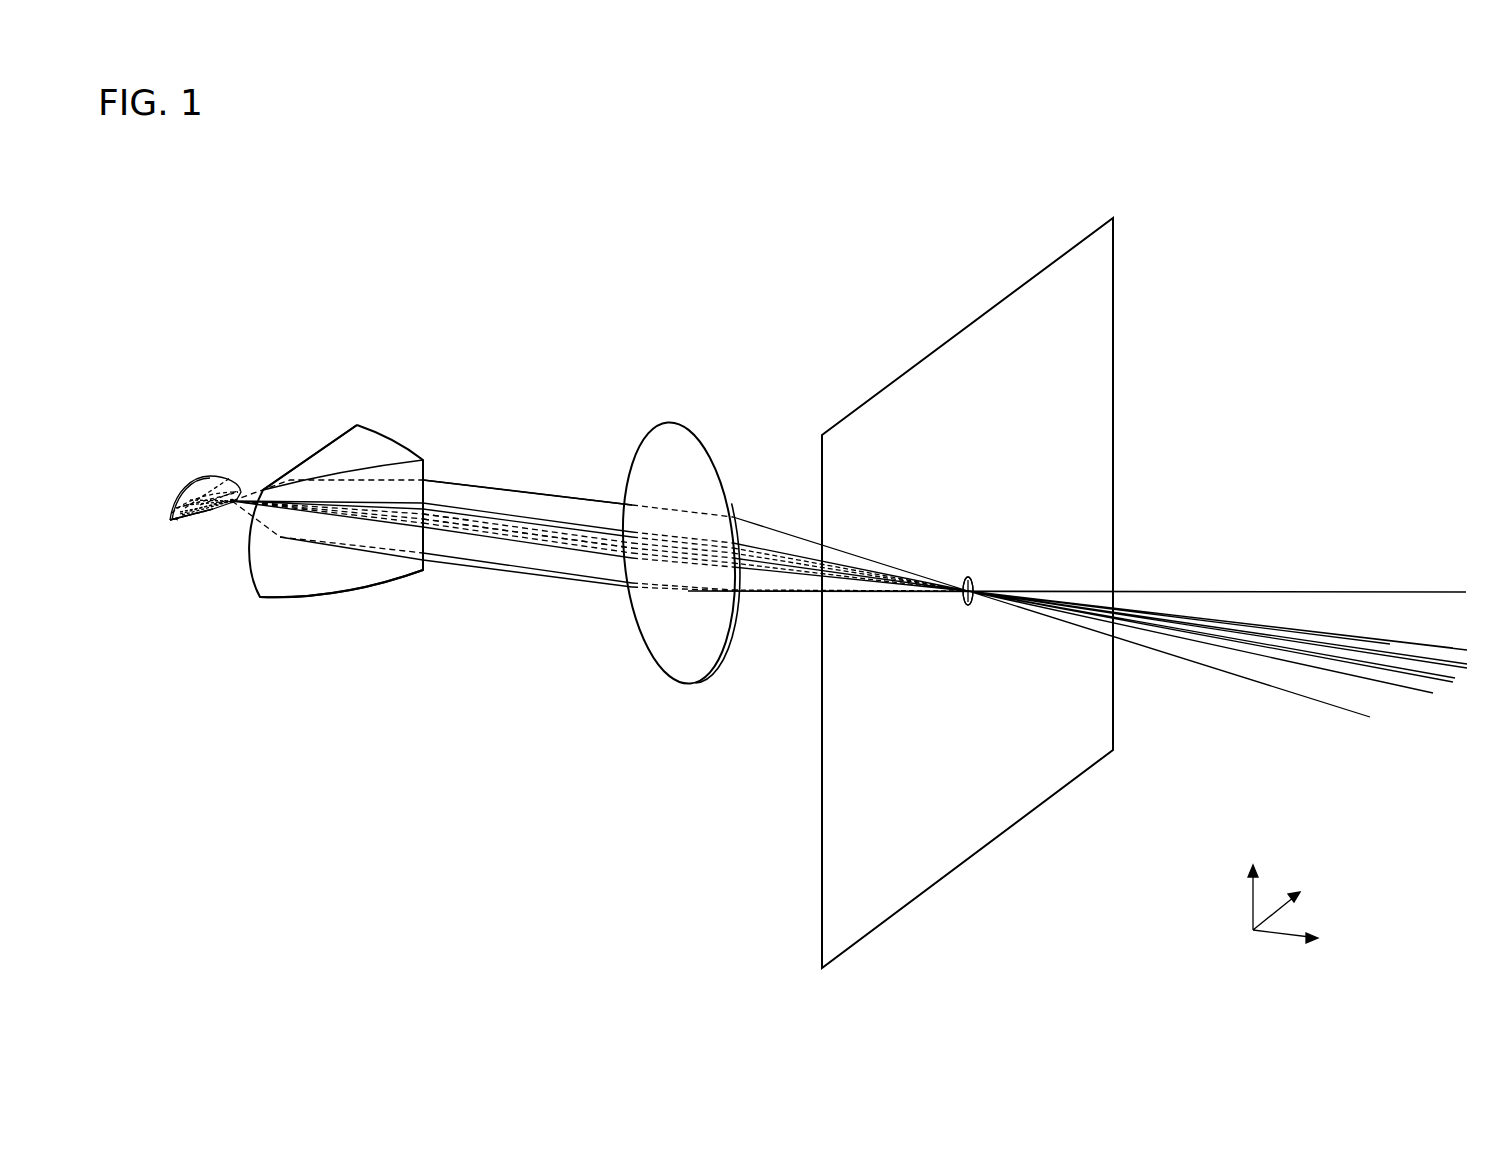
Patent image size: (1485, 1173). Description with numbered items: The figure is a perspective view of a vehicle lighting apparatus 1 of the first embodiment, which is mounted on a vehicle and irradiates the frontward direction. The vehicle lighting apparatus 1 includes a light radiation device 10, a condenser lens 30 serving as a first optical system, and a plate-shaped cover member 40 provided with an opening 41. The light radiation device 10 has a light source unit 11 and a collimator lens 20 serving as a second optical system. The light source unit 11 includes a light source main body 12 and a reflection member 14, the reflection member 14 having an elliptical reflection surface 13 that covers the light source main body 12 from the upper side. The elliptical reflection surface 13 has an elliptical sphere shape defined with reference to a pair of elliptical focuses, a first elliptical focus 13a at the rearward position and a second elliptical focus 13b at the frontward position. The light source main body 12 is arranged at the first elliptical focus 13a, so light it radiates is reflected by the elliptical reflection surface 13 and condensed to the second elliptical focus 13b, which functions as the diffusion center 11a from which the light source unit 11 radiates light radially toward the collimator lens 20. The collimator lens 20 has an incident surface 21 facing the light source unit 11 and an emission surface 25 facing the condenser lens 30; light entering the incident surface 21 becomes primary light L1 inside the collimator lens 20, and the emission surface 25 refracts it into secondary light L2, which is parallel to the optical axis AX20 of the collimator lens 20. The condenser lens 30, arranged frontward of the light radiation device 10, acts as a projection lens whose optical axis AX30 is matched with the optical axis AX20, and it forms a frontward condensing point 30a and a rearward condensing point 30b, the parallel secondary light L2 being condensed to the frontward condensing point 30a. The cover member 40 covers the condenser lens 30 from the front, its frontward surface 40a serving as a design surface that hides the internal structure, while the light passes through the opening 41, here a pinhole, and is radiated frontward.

The vehicle lighting apparatus 1 is at (1194, 163).
The light radiation device 10 is at (365, 305).
The light source unit 11 is at (188, 476).
The diffusion center 11a is at (228, 494).
The light source main body 12 is at (200, 508).
The elliptical reflection surface 13 is at (204, 518).
The first elliptical focus 13a is at (172, 520).
The second elliptical focus 13b is at (228, 494).
The reflection member 14 is at (183, 485).
The collimator lens 20 is at (357, 424).
The incident surface 21 is at (336, 440).
The emission surface 25 is at (337, 575).
The condenser lens 30 is at (702, 430).
The frontward condensing point 30a is at (968, 605).
The rearward condensing point 30b is at (433, 521).
The cover member 40 is at (1120, 214).
The frontward surface 40a is at (1100, 273).
The opening 41 is at (978, 590).
The primary light L1 is at (360, 473).
The secondary light L2 is at (447, 479).
The optical axis of the collimator lens AX20 is at (498, 537).
The optical axis of the condenser lens AX30 is at (769, 568).